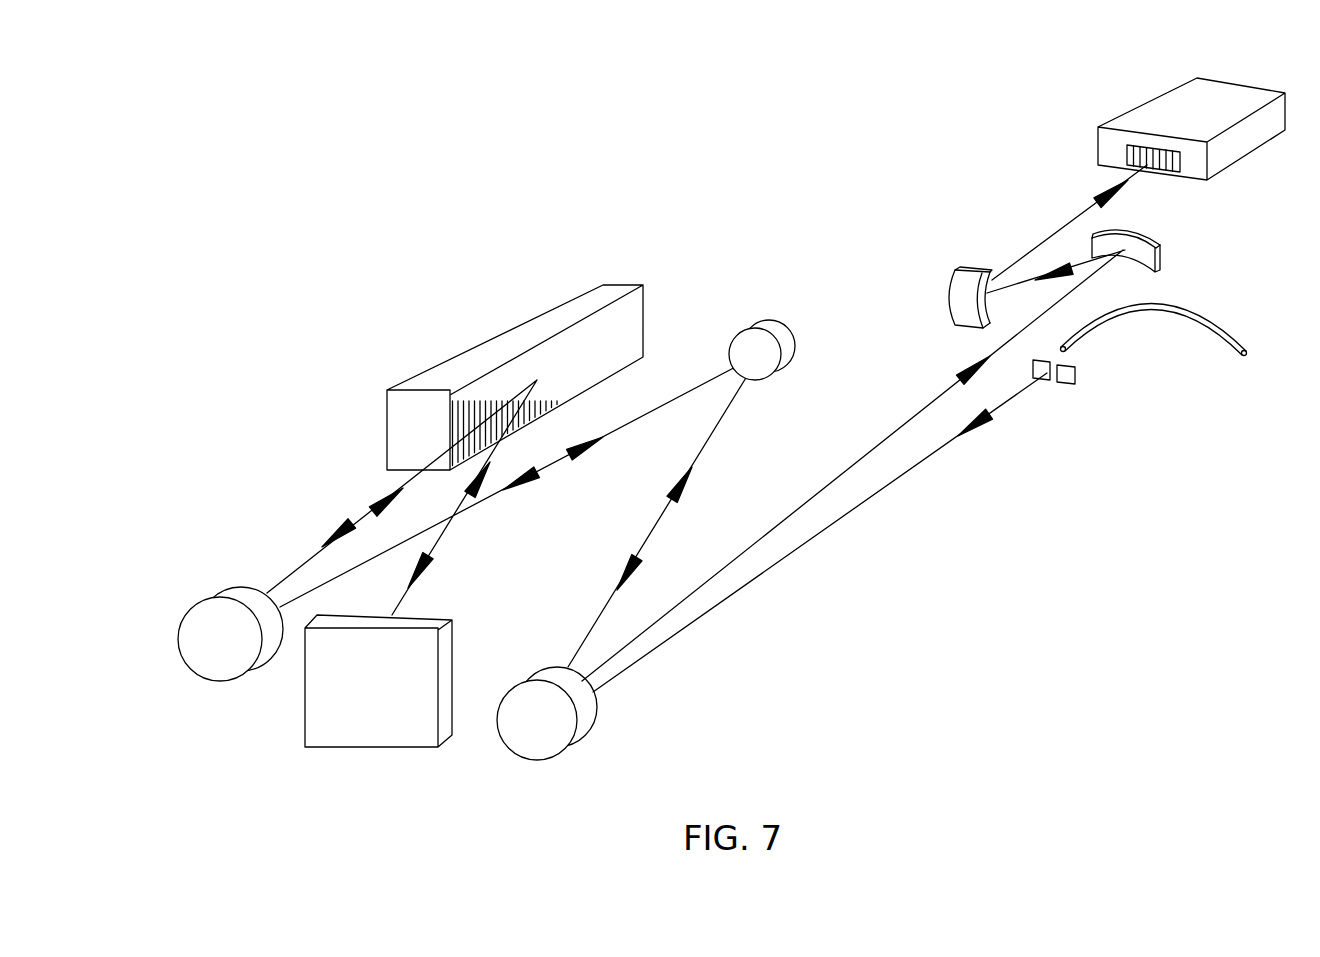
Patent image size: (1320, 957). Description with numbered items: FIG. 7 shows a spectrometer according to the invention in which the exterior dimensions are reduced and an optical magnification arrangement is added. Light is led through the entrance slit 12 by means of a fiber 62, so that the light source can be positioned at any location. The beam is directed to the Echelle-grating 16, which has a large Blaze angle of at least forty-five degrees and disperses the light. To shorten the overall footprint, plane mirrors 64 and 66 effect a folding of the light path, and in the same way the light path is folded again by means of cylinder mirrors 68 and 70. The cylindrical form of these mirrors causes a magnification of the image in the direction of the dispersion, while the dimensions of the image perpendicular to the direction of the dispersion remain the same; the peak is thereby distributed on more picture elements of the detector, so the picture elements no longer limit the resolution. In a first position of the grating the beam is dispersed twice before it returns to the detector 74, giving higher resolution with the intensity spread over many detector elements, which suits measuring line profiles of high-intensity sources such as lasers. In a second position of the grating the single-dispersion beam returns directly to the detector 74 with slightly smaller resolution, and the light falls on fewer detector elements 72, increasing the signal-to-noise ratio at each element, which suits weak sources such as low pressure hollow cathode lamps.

The entrance slit 12 is at (1068, 385).
The Echelle-grating 16 is at (608, 297).
The fiber 62 is at (1197, 318).
The plane mirror 64 is at (562, 727).
The plane mirror 66 is at (775, 353).
The cylinder mirror 68 is at (1156, 260).
The cylinder mirror 70 is at (958, 278).
The detector elements 72 is at (1162, 150).
The detector 74 is at (1197, 172).